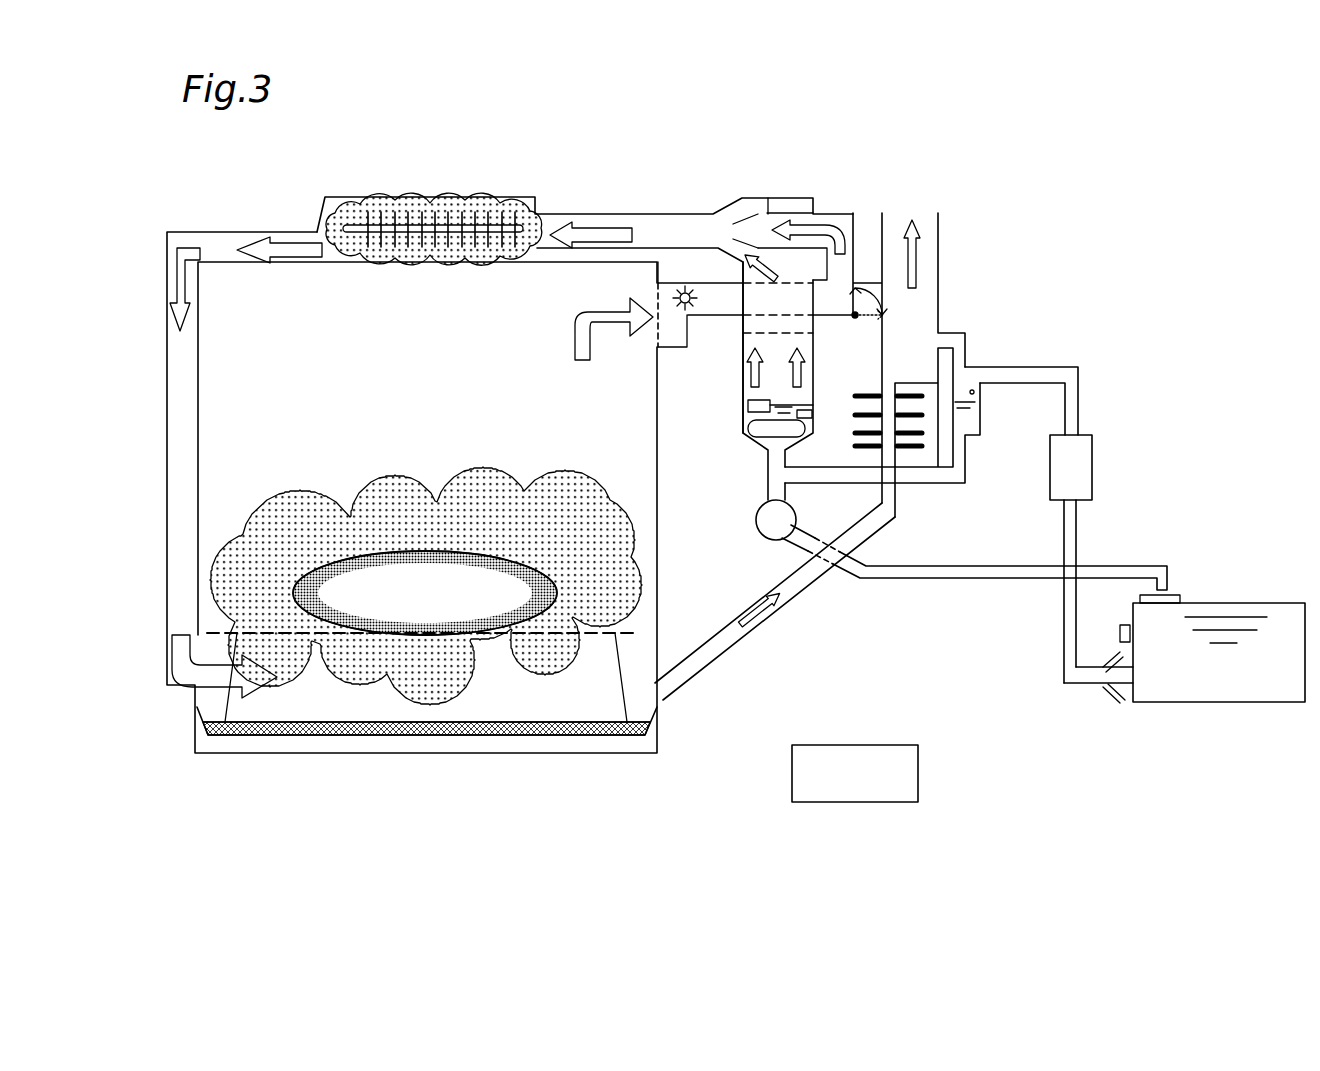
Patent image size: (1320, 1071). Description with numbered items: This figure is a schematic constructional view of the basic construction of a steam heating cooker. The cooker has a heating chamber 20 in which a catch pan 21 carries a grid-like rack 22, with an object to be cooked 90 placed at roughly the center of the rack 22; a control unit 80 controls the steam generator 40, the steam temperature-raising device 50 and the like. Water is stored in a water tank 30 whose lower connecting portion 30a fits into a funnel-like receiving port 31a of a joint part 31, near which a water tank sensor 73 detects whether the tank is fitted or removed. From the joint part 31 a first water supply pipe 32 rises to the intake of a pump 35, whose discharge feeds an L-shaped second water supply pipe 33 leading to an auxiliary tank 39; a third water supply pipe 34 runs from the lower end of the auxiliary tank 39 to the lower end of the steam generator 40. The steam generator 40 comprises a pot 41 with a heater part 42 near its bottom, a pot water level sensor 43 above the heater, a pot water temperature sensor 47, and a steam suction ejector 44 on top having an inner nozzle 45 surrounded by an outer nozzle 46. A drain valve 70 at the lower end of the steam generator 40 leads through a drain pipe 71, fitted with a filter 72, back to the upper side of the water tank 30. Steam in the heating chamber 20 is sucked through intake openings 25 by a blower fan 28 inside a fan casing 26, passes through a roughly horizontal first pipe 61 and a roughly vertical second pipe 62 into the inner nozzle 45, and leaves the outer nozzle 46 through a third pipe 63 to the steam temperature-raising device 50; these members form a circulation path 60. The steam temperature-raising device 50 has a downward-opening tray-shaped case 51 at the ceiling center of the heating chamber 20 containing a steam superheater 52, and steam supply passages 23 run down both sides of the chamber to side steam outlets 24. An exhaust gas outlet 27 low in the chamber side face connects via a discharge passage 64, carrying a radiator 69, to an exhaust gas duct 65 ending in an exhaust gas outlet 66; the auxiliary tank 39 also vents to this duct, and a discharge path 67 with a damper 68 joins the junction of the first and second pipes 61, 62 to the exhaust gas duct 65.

The heating chamber 20 is at (220, 405).
The catch pan 21 is at (258, 735).
The rack 22 is at (330, 690).
The steam supply passage 23 is at (230, 232).
The side steam outlet 24 is at (205, 630).
The intake opening 25 is at (656, 332).
The fan casing 26 is at (667, 367).
The exhaust gas outlet 27 is at (665, 690).
The blower fan 28 is at (692, 290).
The water tank 30 is at (1212, 702).
The connecting portion 30a is at (1120, 705).
The joint part 31 is at (1085, 690).
The receiving port 31a is at (1105, 700).
The first water supply pipe 32 is at (1077, 530).
The second water supply pipe 33 is at (1085, 378).
The third water supply pipe 34 is at (918, 490).
The pump 35 is at (1092, 465).
The auxiliary tank 39 is at (975, 440).
The steam generator 40 is at (812, 170).
The pot 41 is at (735, 393).
The heater part 42 is at (768, 435).
The pot water level sensor 43 is at (745, 407).
The steam suction ejector 44 is at (719, 189).
The inner nozzle 45 is at (768, 198).
The outer nozzle 46 is at (740, 198).
The pot water temperature sensor 47 is at (810, 413).
The steam temperature-raising device 50 is at (334, 195).
The tray-shaped case 51 is at (462, 200).
The steam superheater 52 is at (430, 212).
The circulation path 60 is at (833, 200).
The first pipe 61 is at (712, 320).
The second pipe 62 is at (857, 250).
The third pipe 63 is at (600, 213).
The discharge passage 64 is at (805, 588).
The exhaust gas duct 65 is at (940, 272).
The exhaust gas outlet 66 is at (937, 225).
The discharge path 67 is at (871, 328).
The damper 68 is at (852, 318).
The radiator 69 is at (860, 420).
The drain valve 70 is at (755, 525).
The drain pipe 71 is at (945, 580).
The filter 72 is at (1172, 597).
The water tank sensor 73 is at (1118, 633).
The control unit 80 is at (920, 770).
The object to be cooked 90 is at (330, 578).